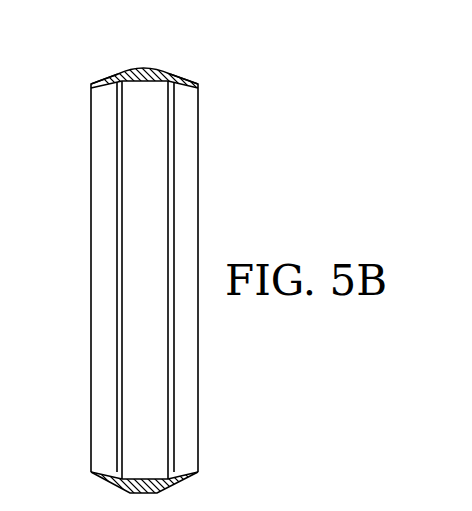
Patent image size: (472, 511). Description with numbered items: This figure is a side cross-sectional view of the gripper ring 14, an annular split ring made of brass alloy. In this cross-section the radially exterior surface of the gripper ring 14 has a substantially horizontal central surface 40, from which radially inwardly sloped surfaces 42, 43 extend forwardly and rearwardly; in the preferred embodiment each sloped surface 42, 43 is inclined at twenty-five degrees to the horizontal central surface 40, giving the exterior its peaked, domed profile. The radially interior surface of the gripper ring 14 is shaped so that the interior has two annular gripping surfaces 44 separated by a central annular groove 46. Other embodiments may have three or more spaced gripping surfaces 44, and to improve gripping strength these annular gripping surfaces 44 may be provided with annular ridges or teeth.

The gripper ring 14 is at (257, 62).
The horizontal central surface 40 is at (145, 65).
The radially inwardly sloped surface 42 is at (112, 78).
The radially inwardly sloped surface 43 is at (177, 73).
The annular gripping surfaces 44 is at (105, 90).
The central annular groove 46 is at (145, 82).